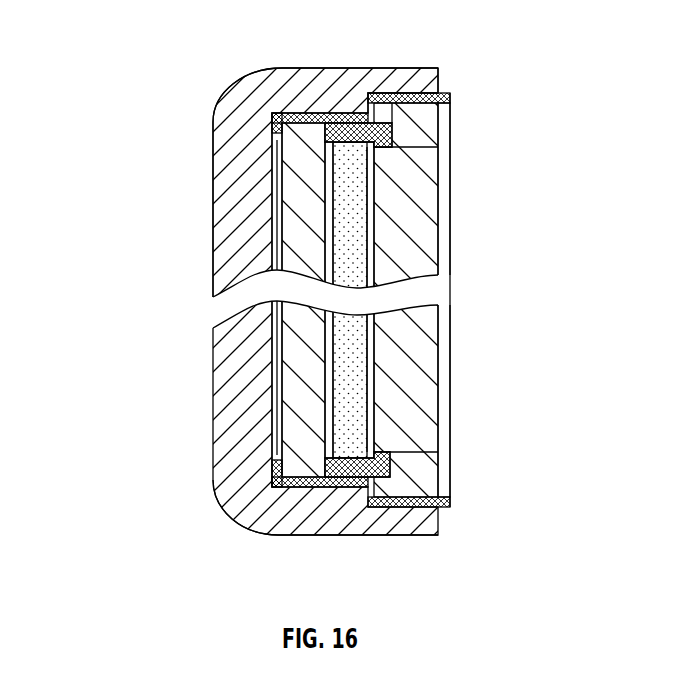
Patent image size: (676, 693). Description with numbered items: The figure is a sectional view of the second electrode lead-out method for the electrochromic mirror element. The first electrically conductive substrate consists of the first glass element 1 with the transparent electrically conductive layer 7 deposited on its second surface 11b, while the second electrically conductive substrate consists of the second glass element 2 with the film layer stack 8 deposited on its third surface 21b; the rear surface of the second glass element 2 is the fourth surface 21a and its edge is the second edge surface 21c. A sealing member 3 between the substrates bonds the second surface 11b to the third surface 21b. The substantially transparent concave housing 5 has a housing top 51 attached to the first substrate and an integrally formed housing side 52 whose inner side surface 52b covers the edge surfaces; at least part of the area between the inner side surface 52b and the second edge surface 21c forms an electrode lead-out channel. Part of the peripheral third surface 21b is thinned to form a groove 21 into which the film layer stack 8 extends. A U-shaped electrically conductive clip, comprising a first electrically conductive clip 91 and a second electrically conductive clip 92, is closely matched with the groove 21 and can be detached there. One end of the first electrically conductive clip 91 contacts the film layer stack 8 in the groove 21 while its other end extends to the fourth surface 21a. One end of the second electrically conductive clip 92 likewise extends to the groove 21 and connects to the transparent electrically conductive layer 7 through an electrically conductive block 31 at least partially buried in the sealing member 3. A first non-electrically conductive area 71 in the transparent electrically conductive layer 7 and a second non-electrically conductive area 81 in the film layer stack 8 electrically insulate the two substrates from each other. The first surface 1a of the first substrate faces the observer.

The first glass element 1 is at (355, 350).
The sensor element body 1a is at (353, 258).
The second glass element 2 is at (410, 392).
The groove 21 is at (380, 462).
The fourth surface 21a is at (442, 425).
The third surface 21b is at (405, 310).
The second edge surface 21c is at (445, 112).
The sealing member 3 is at (285, 492).
The electrically conductive block 31 is at (327, 172).
The concave housing 5 is at (97, 167).
The housing top 51 is at (237, 248).
The housing side 52 is at (330, 85).
The inner side surface 52b is at (398, 92).
The transparent electrically conductive layer 7 is at (325, 372).
The first non-electrically conductive area 71 is at (325, 458).
The film layer stack 8 is at (372, 278).
The second non-electrically conductive area 81 is at (368, 148).
The second surface 11b is at (325, 418).
The first electrically conductive clip 91 is at (442, 500).
The second electrically conductive clip 92 is at (450, 103).